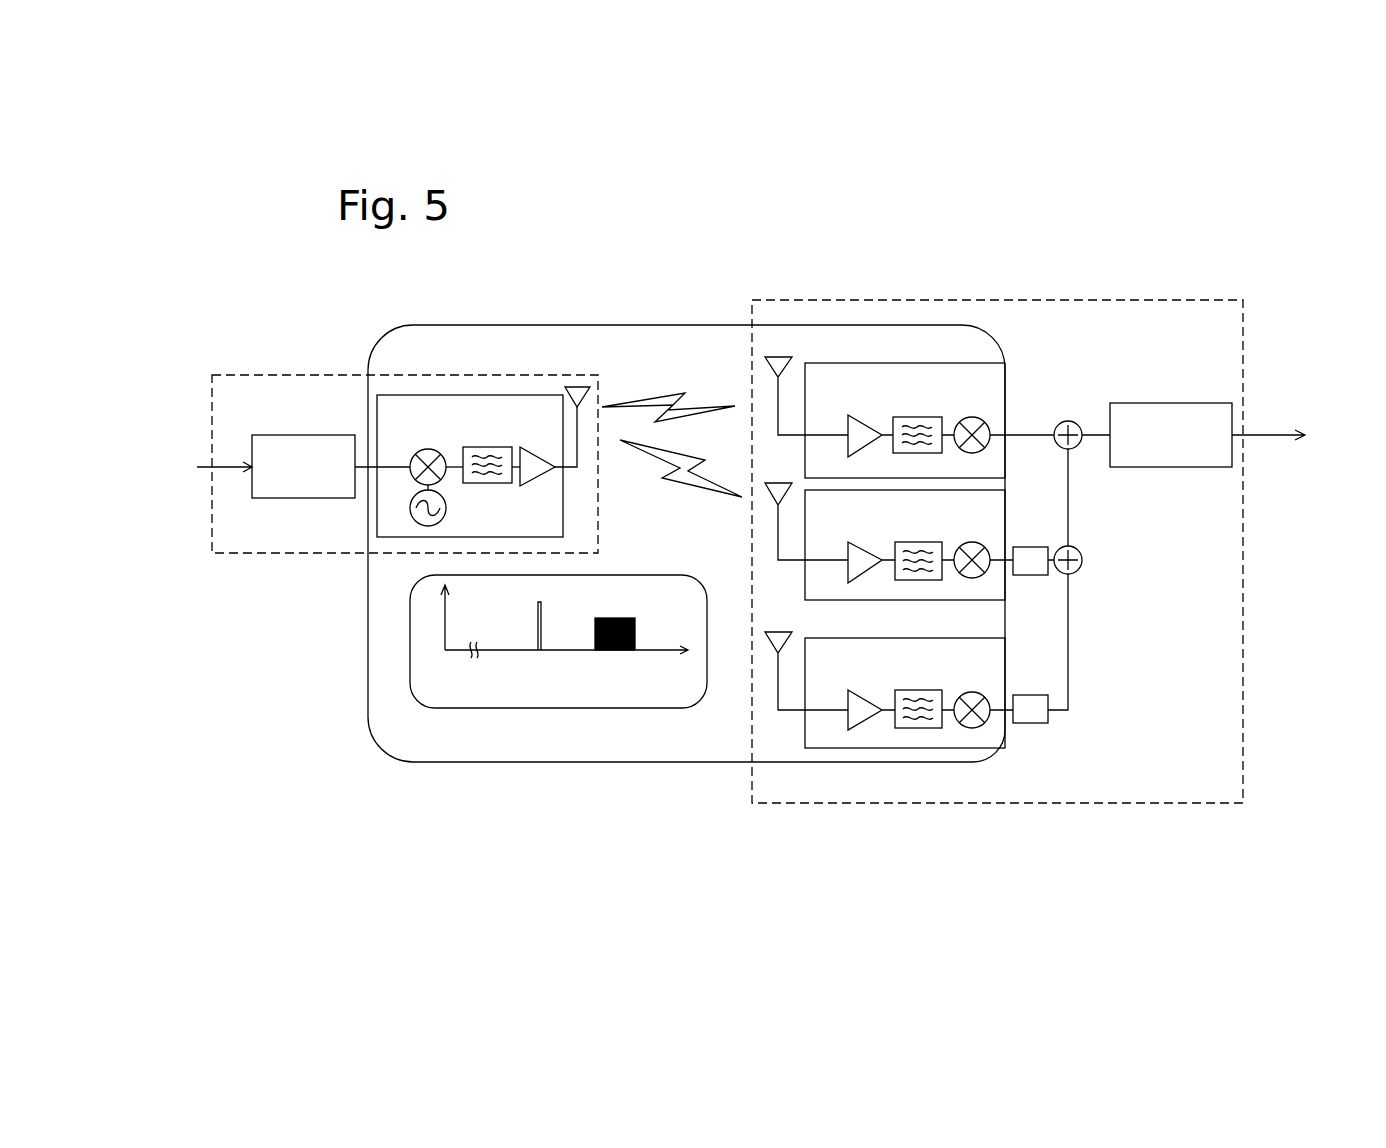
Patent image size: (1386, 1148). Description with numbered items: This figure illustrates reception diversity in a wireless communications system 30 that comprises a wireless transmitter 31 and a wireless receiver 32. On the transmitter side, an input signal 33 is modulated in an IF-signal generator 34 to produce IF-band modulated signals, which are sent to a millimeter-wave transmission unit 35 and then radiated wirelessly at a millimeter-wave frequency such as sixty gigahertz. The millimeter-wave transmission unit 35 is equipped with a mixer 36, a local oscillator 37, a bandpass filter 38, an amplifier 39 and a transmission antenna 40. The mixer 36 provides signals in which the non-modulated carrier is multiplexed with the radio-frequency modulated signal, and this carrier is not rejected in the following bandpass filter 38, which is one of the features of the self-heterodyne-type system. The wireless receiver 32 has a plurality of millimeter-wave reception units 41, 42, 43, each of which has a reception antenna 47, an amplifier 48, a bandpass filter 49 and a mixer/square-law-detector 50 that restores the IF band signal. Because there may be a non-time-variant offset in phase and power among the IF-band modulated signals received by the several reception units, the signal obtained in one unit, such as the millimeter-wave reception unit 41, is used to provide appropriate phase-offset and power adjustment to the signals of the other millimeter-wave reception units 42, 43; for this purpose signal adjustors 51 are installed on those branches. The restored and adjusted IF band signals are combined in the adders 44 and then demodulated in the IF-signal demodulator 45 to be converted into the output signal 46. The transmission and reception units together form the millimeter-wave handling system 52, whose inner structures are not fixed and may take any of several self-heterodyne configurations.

The wireless communications system 30 is at (893, 257).
The wireless transmitter 31 is at (282, 375).
The wireless receiver 32 is at (1188, 300).
The input signal 33 is at (152, 498).
The IF-signal generator 34 is at (280, 498).
The millimeter-wave transmission unit 35 is at (400, 395).
The mixer 36 is at (413, 457).
The local oscillator 37 is at (413, 514).
The bandpass filter 38 is at (490, 485).
The amplifier 39 is at (545, 480).
The transmission antenna 40 is at (585, 387).
The millimeter-wave reception unit 41 is at (930, 363).
The millimeter-wave reception unit 42 is at (987, 603).
The millimeter-wave reception unit 43 is at (1007, 738).
The adder 44 is at (1075, 422).
The IF-signal demodulator 45 is at (1172, 403).
The output signal 46 is at (1340, 410).
The reception antenna 47 is at (780, 357).
The amplifier 48 is at (847, 449).
The bandpass filter 49 is at (928, 457).
The mixer/square-law-detector 50 is at (987, 422).
The signal adjustor 51 is at (1030, 547).
The millimeter-wave handling system 52 is at (657, 762).